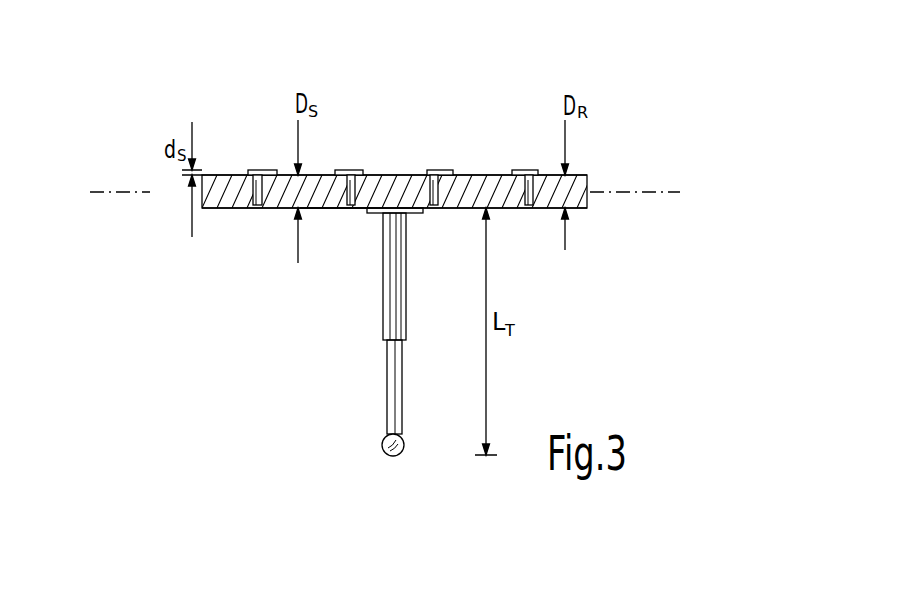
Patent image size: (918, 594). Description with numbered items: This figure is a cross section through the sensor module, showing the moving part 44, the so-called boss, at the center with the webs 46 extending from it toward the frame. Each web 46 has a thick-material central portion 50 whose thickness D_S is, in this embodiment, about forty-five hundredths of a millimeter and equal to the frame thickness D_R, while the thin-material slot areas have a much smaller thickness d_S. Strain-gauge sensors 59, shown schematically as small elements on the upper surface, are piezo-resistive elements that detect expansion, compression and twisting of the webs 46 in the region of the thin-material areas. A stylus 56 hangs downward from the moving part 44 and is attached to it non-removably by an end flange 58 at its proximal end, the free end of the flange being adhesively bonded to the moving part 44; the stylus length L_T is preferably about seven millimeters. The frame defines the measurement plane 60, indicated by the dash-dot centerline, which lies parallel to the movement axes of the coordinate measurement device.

The moving part 44 is at (400, 190).
The web 46 is at (488, 162).
The thick-material central portion 50 is at (325, 198).
The stylus 56 is at (400, 415).
The end flange 58 is at (418, 215).
The strain-gauge sensors 59 is at (262, 170).
The measurement plane 60 is at (660, 192).